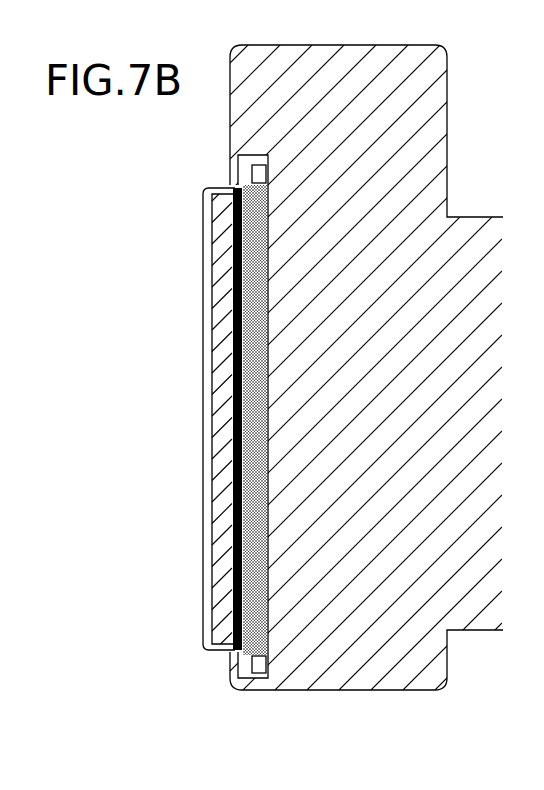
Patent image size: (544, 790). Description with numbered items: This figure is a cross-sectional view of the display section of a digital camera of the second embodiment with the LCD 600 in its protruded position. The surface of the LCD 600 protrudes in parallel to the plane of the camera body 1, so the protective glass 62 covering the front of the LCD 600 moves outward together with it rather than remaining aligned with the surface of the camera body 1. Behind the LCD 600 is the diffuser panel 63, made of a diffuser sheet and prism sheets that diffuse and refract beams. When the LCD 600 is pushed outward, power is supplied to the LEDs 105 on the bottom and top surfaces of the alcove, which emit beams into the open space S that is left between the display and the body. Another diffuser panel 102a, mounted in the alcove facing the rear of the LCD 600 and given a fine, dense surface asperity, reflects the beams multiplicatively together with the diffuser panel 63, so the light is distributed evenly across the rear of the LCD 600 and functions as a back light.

The camera body 1 is at (410, 670).
The LEDs 105 is at (252, 173).
The open space S is at (255, 275).
The diffuser panel 102a is at (262, 607).
The LCD 600 is at (223, 545).
The protective glass 62 is at (211, 447).
The diffuser panel 63 is at (232, 340).